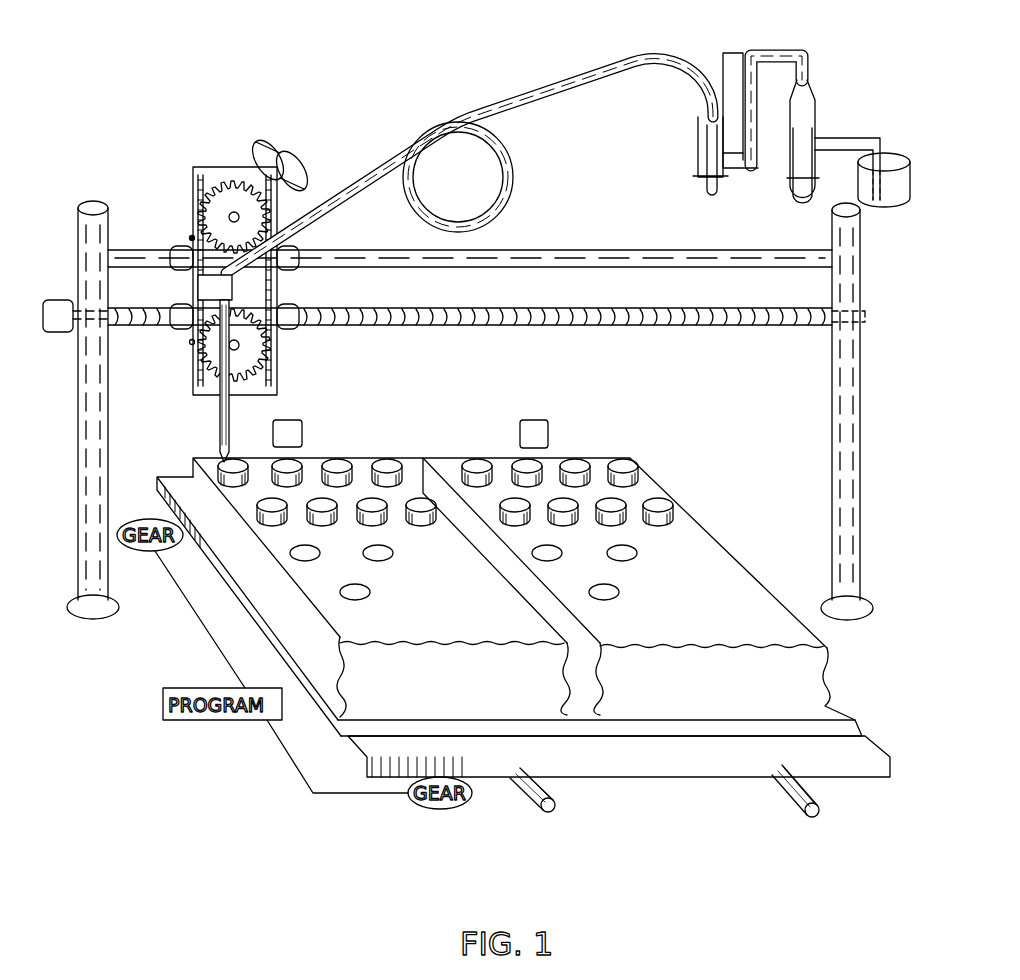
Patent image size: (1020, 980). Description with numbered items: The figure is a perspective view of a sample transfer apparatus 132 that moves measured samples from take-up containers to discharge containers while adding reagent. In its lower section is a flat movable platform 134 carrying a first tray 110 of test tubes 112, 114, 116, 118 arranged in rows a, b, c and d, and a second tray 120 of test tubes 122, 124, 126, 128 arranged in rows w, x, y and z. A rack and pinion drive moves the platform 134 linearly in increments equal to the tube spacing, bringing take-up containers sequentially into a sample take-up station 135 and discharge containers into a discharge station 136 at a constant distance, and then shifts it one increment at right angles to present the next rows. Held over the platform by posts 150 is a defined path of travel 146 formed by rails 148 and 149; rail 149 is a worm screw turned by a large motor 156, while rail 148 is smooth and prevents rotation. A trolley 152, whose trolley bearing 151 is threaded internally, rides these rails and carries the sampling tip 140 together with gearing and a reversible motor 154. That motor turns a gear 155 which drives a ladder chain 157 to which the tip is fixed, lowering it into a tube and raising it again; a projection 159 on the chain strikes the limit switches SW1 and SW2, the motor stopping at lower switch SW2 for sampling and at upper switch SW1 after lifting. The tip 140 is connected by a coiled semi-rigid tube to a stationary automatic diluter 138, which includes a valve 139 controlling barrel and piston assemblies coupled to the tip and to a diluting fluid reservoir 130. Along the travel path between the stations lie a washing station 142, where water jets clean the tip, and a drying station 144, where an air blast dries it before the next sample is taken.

The first tray 110 is at (466, 681).
The test tube 112 is at (225, 463).
The test tube 114 is at (265, 512).
The test tube 116 is at (340, 462).
The test tube 118 is at (389, 462).
The second tray 120 is at (725, 681).
The test tube 122 is at (472, 462).
The test tube 124 is at (513, 505).
The test tube 126 is at (573, 462).
The test tube 128 is at (621, 462).
The diluting fluid reservoir 130 is at (902, 183).
The apparatus 132 is at (280, 291).
The flat movable platform 134 is at (865, 752).
The sample take-up station 135 is at (181, 425).
The discharge station 136 is at (511, 360).
The automatic diluter 138 is at (743, 54).
The valve 139 is at (700, 106).
The sampling tip 140 is at (218, 437).
The washing station 142 is at (540, 420).
The drying station 144 is at (301, 421).
The path of travel 146 is at (759, 360).
The rail 148 is at (757, 250).
The rail 149 is at (797, 312).
The post 150 is at (832, 412).
The trolley bearing 151 is at (172, 308).
The trolley 152 is at (238, 166).
The reversible motor 154 is at (290, 150).
The gear 155 is at (240, 215).
The large motor 156 is at (53, 300).
The ladder chain 157 is at (278, 258).
The projection 159 is at (193, 320).
The upper limit switch SW1 is at (188, 237).
The lower limit switch SW2 is at (190, 345).